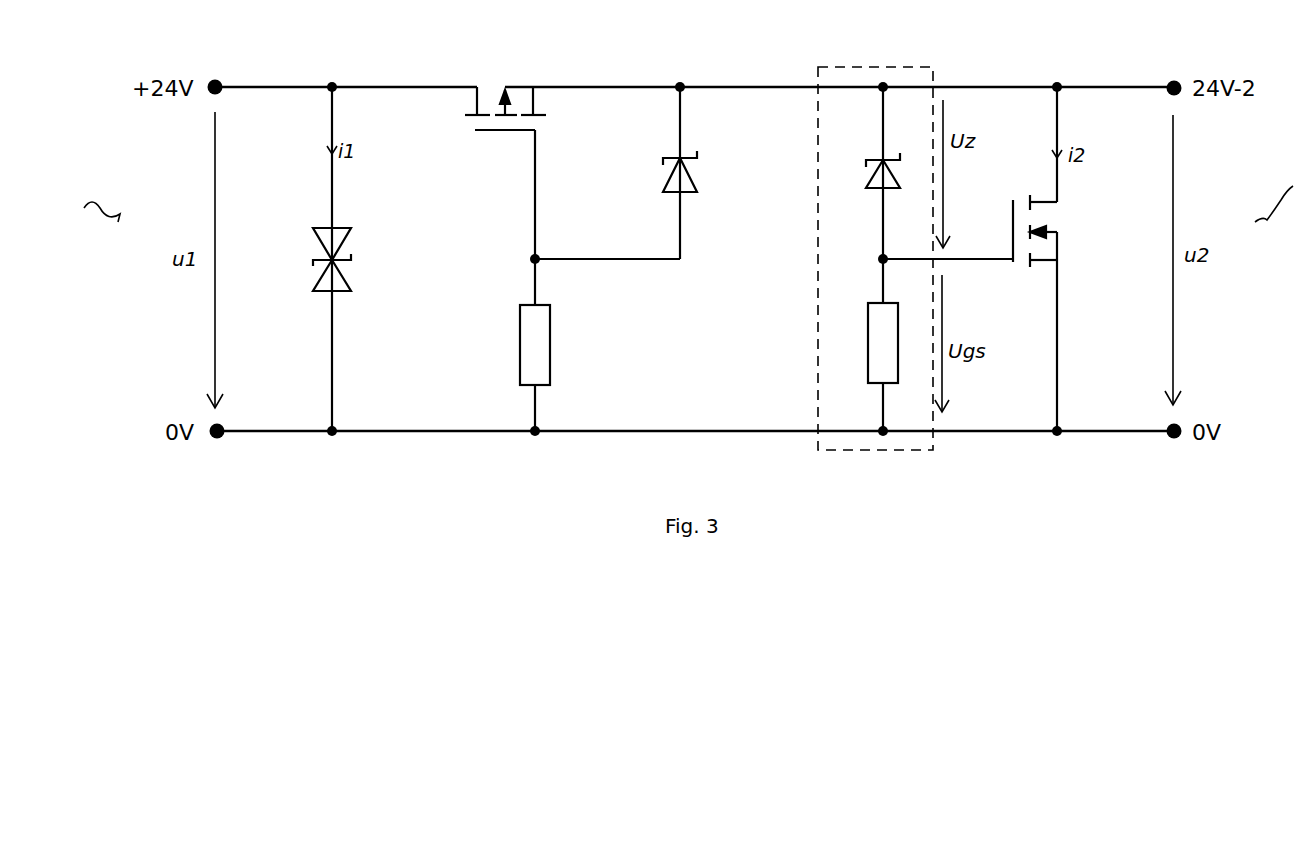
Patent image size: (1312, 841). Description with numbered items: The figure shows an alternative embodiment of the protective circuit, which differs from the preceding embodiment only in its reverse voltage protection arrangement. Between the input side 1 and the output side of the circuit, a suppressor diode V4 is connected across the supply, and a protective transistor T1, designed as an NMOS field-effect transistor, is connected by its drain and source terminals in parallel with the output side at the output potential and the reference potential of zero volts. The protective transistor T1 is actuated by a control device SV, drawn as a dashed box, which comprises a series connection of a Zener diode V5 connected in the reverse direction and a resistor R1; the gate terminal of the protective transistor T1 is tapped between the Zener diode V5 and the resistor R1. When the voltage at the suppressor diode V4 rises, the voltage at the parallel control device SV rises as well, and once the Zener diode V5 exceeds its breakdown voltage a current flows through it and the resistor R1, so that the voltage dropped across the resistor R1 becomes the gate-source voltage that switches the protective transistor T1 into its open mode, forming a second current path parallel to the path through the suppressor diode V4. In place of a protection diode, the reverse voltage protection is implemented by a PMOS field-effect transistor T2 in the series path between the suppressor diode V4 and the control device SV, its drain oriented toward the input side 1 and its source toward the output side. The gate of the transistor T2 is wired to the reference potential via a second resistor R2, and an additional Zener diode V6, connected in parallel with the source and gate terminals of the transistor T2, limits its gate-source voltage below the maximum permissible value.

The input side 1 is at (667, 207).
The control device SV is at (933, 67).
The suppressor diode V4 is at (318, 259).
The field-effect transistor T2 is at (501, 155).
The Zener diode V6 is at (616, 173).
The second resistor R2 is at (513, 345).
The Zener diode V5 is at (865, 173).
The resistor R1 is at (861, 345).
The protective transistor T1 is at (980, 259).